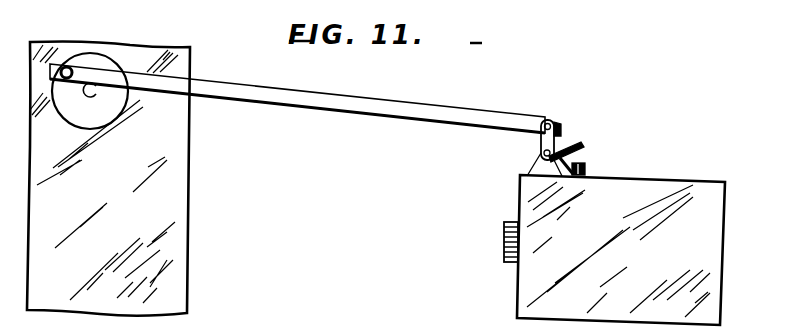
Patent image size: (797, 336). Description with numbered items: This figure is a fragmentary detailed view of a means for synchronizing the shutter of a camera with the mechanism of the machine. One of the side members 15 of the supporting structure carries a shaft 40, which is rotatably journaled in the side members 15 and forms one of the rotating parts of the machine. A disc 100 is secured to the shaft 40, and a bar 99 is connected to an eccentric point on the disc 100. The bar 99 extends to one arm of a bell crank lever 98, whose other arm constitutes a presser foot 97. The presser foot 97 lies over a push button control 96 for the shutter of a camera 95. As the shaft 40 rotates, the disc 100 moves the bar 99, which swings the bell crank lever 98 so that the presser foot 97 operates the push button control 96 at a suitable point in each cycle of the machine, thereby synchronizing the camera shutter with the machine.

The side member 15 is at (181, 206).
The shaft 40 is at (96, 93).
The camera 95 is at (523, 279).
The push button control 96 is at (588, 166).
The presser foot 97 is at (577, 148).
The bell crank lever 98 is at (540, 142).
The bar 99 is at (315, 104).
The disc 100 is at (73, 117).